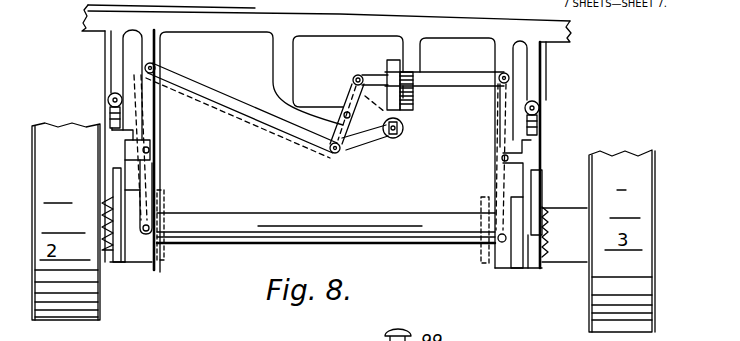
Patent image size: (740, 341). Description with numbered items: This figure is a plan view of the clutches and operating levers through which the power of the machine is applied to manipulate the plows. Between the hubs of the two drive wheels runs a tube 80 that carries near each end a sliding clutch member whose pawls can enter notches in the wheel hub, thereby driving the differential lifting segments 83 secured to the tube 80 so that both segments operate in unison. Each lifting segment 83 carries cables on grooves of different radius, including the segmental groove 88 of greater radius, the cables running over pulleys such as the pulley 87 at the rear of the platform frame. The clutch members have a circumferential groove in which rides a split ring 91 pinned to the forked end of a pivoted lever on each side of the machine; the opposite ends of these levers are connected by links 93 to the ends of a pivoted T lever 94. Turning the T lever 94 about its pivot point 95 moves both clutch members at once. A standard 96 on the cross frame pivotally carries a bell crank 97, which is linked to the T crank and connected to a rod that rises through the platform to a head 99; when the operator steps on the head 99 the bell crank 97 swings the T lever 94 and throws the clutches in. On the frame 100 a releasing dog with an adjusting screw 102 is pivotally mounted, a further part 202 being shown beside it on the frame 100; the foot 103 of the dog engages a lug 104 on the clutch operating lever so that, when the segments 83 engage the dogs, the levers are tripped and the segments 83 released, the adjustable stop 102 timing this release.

The pulley 87 is at (344, 22).
The frame 100 is at (110, 63).
The roller 202 is at (110, 118).
The foot 103 is at (115, 135).
The lug 104 is at (140, 147).
The differential lifting segment 83 is at (119, 262).
The split ring 91 is at (146, 265).
The link 93 is at (265, 118).
The T lever 94 is at (353, 127).
The pivot point 95 is at (338, 108).
The bell crank 97 is at (393, 93).
The standard 96 is at (410, 93).
The head 99 is at (400, 138).
The tube 80 is at (455, 247).
The adjusting screw 102 is at (542, 110).
The segmental groove 88 is at (538, 170).